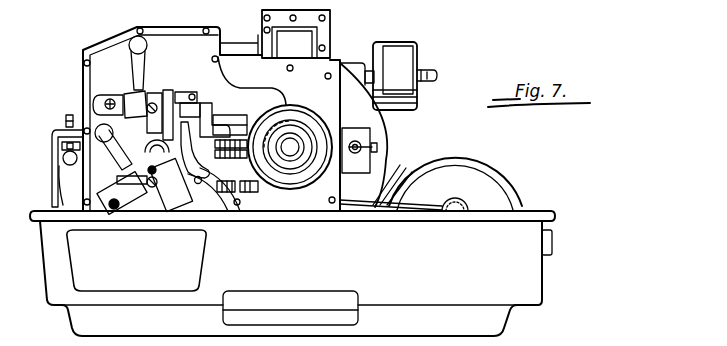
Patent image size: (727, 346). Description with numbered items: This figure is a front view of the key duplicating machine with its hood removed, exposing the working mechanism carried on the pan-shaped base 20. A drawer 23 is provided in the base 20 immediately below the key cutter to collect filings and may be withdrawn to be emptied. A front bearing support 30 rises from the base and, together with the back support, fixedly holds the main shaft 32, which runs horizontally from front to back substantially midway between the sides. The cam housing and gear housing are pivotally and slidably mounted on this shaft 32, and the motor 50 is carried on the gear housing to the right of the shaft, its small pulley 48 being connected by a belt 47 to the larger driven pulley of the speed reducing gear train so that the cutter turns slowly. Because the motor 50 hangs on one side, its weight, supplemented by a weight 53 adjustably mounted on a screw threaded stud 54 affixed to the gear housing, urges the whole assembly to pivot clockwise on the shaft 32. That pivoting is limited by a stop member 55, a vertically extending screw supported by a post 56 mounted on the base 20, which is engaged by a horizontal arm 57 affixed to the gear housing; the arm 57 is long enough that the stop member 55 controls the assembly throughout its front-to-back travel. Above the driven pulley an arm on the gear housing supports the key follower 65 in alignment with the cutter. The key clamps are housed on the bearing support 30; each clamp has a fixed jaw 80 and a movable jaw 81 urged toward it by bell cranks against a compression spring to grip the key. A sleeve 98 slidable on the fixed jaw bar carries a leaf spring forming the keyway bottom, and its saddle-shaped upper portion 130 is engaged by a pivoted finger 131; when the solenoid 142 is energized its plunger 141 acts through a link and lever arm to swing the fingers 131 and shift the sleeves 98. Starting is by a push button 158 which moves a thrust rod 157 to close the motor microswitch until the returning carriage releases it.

The pan-shaped base 20 is at (530, 284).
The drawer 23 is at (88, 278).
The front bearing support 30 is at (322, 68).
The main shaft 32 is at (292, 148).
The belt 47 is at (391, 178).
The motor pulley 48 is at (468, 204).
The motor 50 is at (457, 175).
The weight 53 is at (398, 50).
The screw threaded stud 54 is at (433, 70).
The stop member 55 is at (63, 120).
The post 56 is at (52, 157).
The horizontal arm 57 is at (62, 160).
The key follower 65 is at (148, 145).
The fixed jaw 80 is at (147, 118).
The movable jaw 81 is at (195, 112).
The sleeve 98 is at (141, 204).
The saddle-shaped upper portion 130 is at (152, 92).
The finger 131 is at (144, 64).
The plunger 141 is at (248, 34).
The solenoid 142 is at (326, 31).
The thrust rod 157 is at (378, 147).
The push button 158 is at (355, 141).